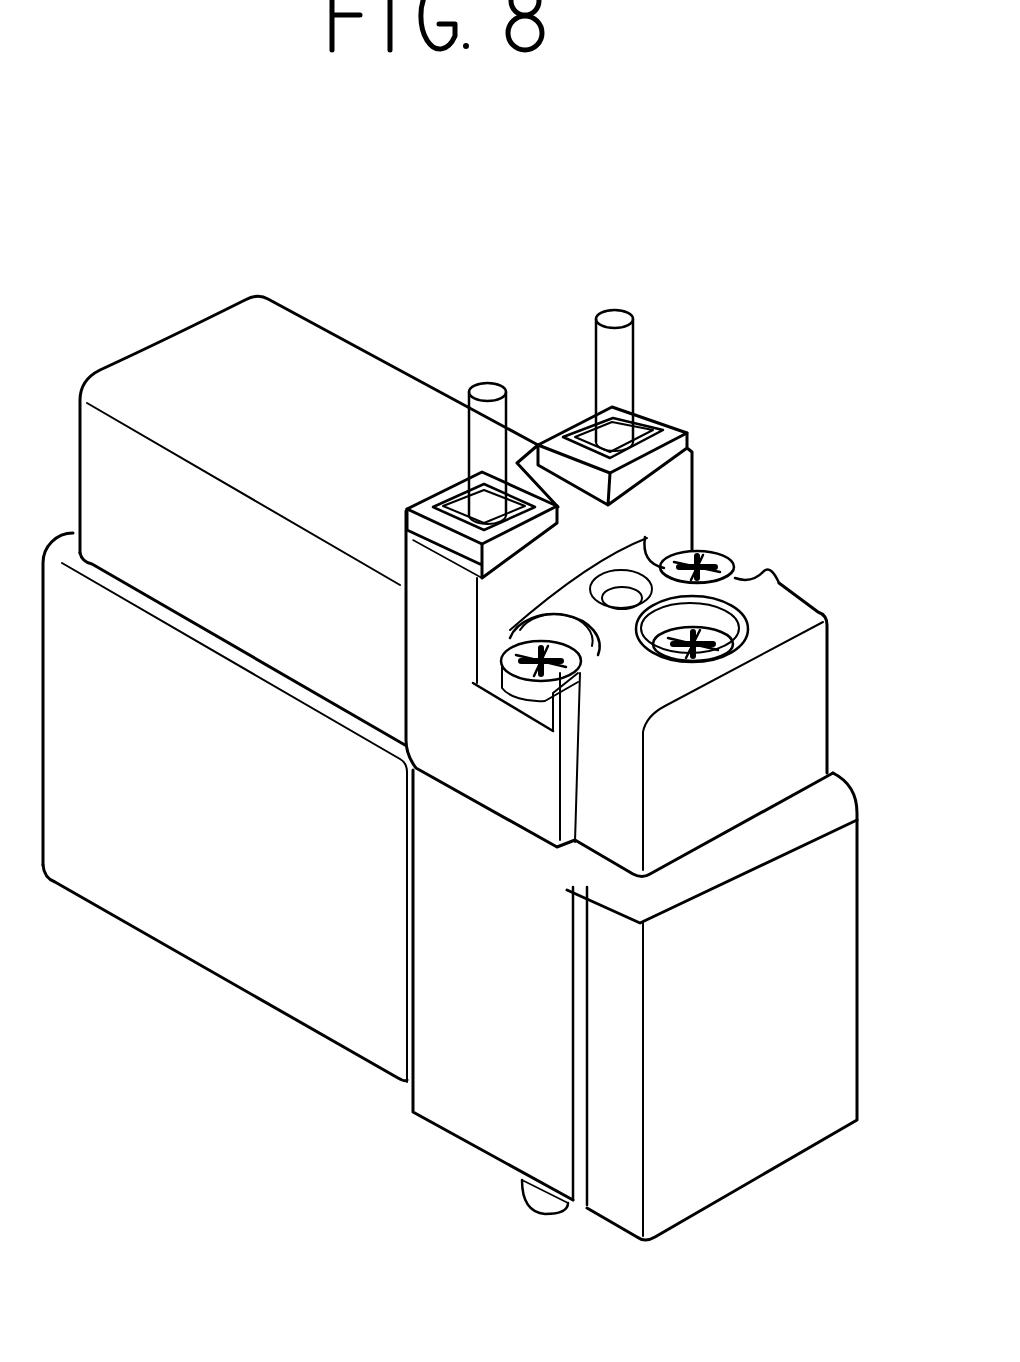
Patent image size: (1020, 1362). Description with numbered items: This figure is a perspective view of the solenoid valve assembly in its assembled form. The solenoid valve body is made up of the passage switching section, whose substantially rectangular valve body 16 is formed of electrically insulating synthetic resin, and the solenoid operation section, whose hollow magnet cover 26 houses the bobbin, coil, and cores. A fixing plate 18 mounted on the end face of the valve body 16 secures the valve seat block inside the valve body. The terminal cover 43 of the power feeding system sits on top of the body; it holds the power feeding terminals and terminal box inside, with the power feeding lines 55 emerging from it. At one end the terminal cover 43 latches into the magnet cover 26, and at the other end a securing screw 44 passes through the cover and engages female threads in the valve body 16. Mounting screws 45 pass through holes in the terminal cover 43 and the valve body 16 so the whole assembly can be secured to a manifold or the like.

The valve body 16 is at (452, 1102).
The fixing plate 18 is at (768, 1147).
The magnet cover 26 is at (135, 890).
The terminal cover 43 is at (195, 340).
The securing screw 44 is at (713, 640).
The mounting screw 45 is at (730, 567).
The power feeding line 55 is at (490, 430).